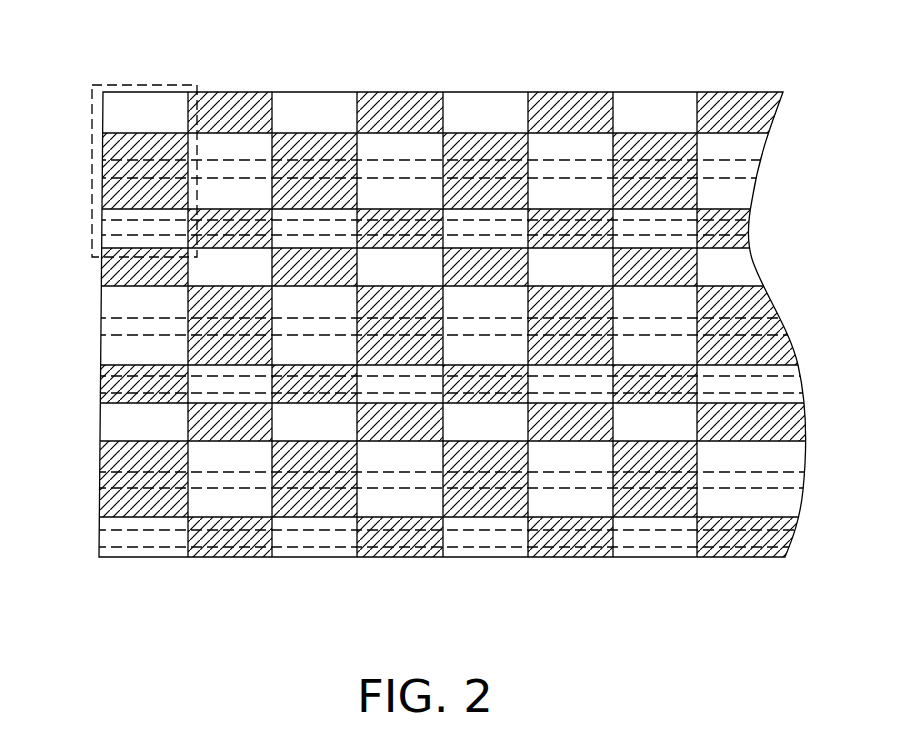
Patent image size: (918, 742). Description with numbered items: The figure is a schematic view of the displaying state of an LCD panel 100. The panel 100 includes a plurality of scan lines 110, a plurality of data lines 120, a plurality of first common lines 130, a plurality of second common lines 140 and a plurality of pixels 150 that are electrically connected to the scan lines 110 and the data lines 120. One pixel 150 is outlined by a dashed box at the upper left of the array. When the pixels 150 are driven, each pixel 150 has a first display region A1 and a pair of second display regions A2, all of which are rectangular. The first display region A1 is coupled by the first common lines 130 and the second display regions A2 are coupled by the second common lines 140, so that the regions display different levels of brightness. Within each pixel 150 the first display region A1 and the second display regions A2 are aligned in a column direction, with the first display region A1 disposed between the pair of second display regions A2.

The LCD panel 100 is at (448, 324).
The scan lines 110 is at (758, 92).
The data lines 120 is at (188, 118).
The first common lines 130 is at (757, 147).
The second common lines 140 is at (750, 208).
The pixels 150 is at (122, 85).
The first display region A1 is at (121, 163).
The second display regions A2 is at (121, 125).